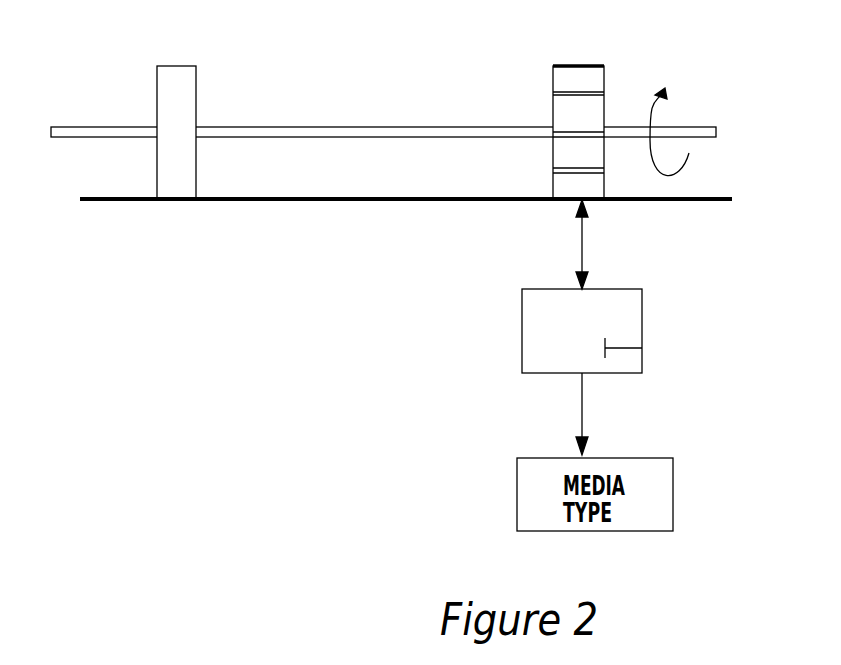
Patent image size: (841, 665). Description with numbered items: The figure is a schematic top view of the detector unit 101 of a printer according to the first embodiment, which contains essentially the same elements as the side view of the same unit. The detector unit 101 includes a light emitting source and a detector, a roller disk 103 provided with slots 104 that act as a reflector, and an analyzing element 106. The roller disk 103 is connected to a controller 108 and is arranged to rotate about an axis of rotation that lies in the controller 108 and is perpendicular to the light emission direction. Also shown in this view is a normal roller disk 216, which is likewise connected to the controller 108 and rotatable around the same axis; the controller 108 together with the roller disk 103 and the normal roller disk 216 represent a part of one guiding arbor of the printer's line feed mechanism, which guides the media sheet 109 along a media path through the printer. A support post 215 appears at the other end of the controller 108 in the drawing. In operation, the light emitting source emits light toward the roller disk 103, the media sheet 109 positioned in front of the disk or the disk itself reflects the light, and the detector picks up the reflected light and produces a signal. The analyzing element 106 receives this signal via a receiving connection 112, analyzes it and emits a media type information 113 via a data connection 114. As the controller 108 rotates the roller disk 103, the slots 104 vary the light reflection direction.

The detector unit 101 is at (423, 477).
The roller disk 103 is at (578, 113).
The slots 104 is at (565, 128).
The analyzing element 106 is at (632, 363).
The controller 108 is at (355, 127).
The media sheet 109 is at (307, 200).
The receiving connection 112 is at (573, 338).
The media type information 113 is at (583, 413).
The data connection 114 is at (618, 338).
The support post 215 is at (178, 66).
The normal roller disk 216 is at (400, 33).